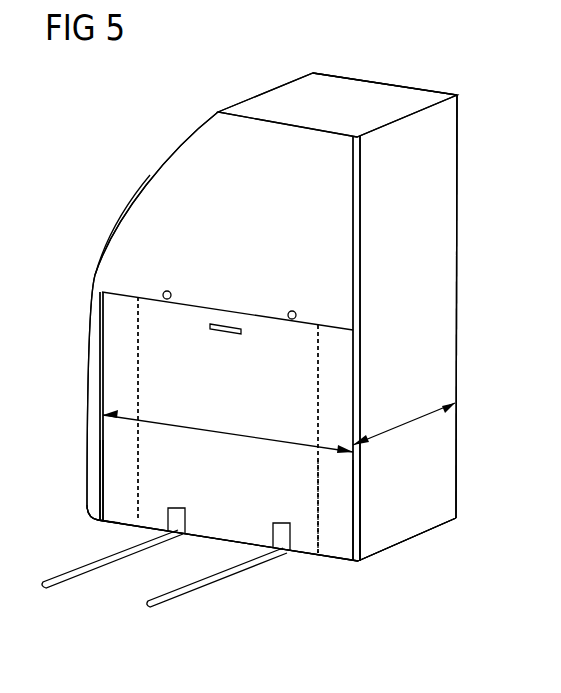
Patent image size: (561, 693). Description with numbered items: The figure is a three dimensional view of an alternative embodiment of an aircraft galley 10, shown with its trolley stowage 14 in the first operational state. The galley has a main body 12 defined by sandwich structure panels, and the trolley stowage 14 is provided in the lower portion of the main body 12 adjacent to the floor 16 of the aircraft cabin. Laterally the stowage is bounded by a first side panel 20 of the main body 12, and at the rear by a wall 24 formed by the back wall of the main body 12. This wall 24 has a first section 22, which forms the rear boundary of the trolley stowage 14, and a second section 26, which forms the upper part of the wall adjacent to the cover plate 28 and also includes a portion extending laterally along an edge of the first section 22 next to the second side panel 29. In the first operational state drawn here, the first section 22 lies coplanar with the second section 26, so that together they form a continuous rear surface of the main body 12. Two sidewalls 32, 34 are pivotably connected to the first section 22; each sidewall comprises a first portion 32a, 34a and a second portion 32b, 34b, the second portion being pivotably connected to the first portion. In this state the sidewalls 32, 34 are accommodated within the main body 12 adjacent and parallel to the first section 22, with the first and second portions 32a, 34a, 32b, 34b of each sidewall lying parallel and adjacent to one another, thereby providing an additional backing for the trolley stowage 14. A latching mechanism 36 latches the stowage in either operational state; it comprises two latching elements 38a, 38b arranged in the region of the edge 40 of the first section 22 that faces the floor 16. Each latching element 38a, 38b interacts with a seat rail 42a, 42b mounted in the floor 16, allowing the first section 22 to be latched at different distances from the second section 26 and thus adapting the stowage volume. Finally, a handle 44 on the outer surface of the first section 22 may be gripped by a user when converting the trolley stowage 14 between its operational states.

The aircraft galley 10 is at (461, 72).
The main body 12 is at (333, 88).
The trolley stowage 14 is at (444, 386).
The floor 16 is at (420, 554).
The first side panel 20 is at (448, 189).
The first section 22 is at (195, 314).
The wall 24 is at (173, 160).
The second section 26 is at (108, 267).
The cover plate 28 is at (386, 92).
The second side panel 29 is at (118, 218).
The sidewall 32 is at (348, 393).
The first portion 32a is at (345, 492).
The second portion 32b is at (360, 348).
The sidewall 34 is at (125, 378).
The first portion 34a is at (110, 487).
The second portion 34b is at (128, 297).
The latching mechanism 36 is at (241, 510).
The latching element 38a is at (176, 508).
The latching element 38b is at (282, 523).
The edge 40 is at (108, 520).
The seat rail 42a is at (90, 577).
The seat rail 42b is at (204, 590).
The handle 44 is at (226, 334).